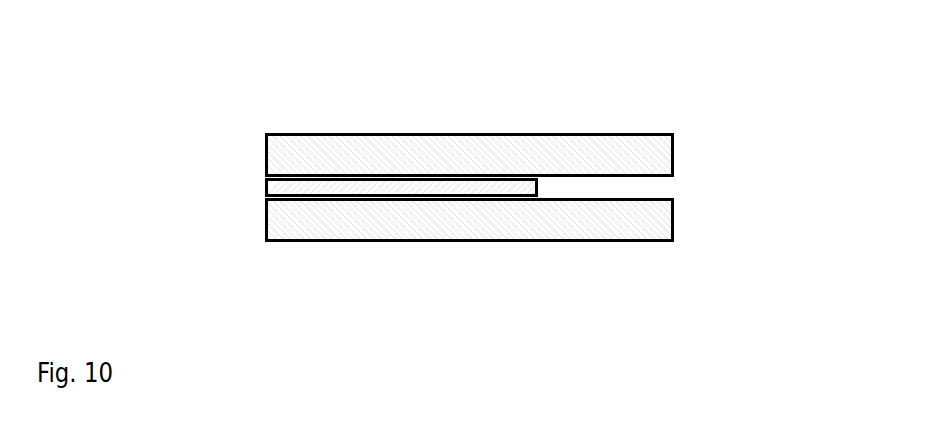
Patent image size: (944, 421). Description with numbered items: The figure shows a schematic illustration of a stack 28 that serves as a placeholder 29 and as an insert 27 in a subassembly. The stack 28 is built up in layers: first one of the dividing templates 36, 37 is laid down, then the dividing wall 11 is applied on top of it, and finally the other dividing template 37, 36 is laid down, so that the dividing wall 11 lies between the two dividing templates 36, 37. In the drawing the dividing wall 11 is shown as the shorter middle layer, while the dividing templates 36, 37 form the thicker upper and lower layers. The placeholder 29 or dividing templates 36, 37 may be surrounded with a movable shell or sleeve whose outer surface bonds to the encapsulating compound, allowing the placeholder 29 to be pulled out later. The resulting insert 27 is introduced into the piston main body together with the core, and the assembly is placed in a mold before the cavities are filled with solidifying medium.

The dividing wall 11 is at (470, 187).
The insert 27 is at (568, 115).
The stack 28 is at (450, 118).
The placeholder 29 is at (320, 118).
The dividing template 36 is at (370, 157).
The dividing template 37 is at (585, 233).